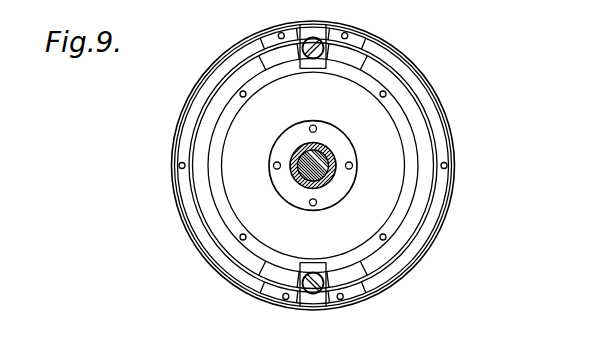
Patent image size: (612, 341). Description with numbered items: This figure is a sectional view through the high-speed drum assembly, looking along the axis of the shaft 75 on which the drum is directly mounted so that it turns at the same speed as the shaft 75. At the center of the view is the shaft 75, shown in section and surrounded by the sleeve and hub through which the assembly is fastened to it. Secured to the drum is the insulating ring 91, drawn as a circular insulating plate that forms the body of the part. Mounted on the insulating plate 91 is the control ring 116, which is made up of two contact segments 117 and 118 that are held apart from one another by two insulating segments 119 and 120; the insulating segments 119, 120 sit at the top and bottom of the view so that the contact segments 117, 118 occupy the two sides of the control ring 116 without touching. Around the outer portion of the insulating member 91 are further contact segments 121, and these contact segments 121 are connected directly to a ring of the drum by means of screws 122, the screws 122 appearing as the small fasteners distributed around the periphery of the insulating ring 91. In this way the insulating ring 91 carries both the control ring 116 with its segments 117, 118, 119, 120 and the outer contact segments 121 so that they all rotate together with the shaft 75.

The shaft 75 is at (302, 173).
The insulating ring 91 is at (385, 197).
The control ring 116 is at (324, 104).
The contact segment 117 is at (242, 100).
The contact segment 118 is at (395, 125).
The insulating segment 119 is at (321, 40).
The insulating segment 120 is at (318, 302).
The contact segments 121 is at (195, 99).
The screws 122 is at (278, 33).